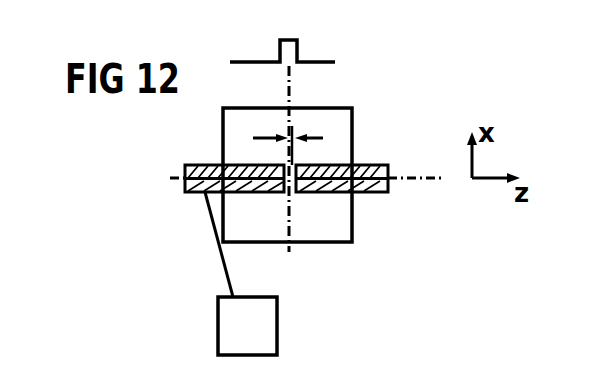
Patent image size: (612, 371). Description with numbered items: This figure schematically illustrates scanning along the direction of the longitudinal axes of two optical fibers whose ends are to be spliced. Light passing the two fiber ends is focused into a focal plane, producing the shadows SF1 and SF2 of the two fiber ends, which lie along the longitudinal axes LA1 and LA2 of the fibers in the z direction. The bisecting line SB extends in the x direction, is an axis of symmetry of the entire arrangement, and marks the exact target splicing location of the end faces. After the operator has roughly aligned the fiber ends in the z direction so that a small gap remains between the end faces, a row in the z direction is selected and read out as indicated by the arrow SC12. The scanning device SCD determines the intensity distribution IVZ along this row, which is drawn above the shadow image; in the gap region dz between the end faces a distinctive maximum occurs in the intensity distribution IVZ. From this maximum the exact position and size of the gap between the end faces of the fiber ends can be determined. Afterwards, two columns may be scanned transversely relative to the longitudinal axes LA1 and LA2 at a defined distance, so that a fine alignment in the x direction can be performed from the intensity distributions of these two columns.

The intensity distribution IVZ is at (254, 62).
The gap region dz is at (292, 108).
The shadow of the second fiber end SF2 is at (360, 164).
The longitudinal axis of the second fiber LA2 is at (403, 172).
The longitudinal axis of the first fiber LA1 is at (184, 172).
The shadow of the first fiber end SF1 is at (202, 192).
The scanning arrow SC12 is at (330, 193).
The bisecting line SB is at (289, 250).
The scanning device SCD is at (255, 336).